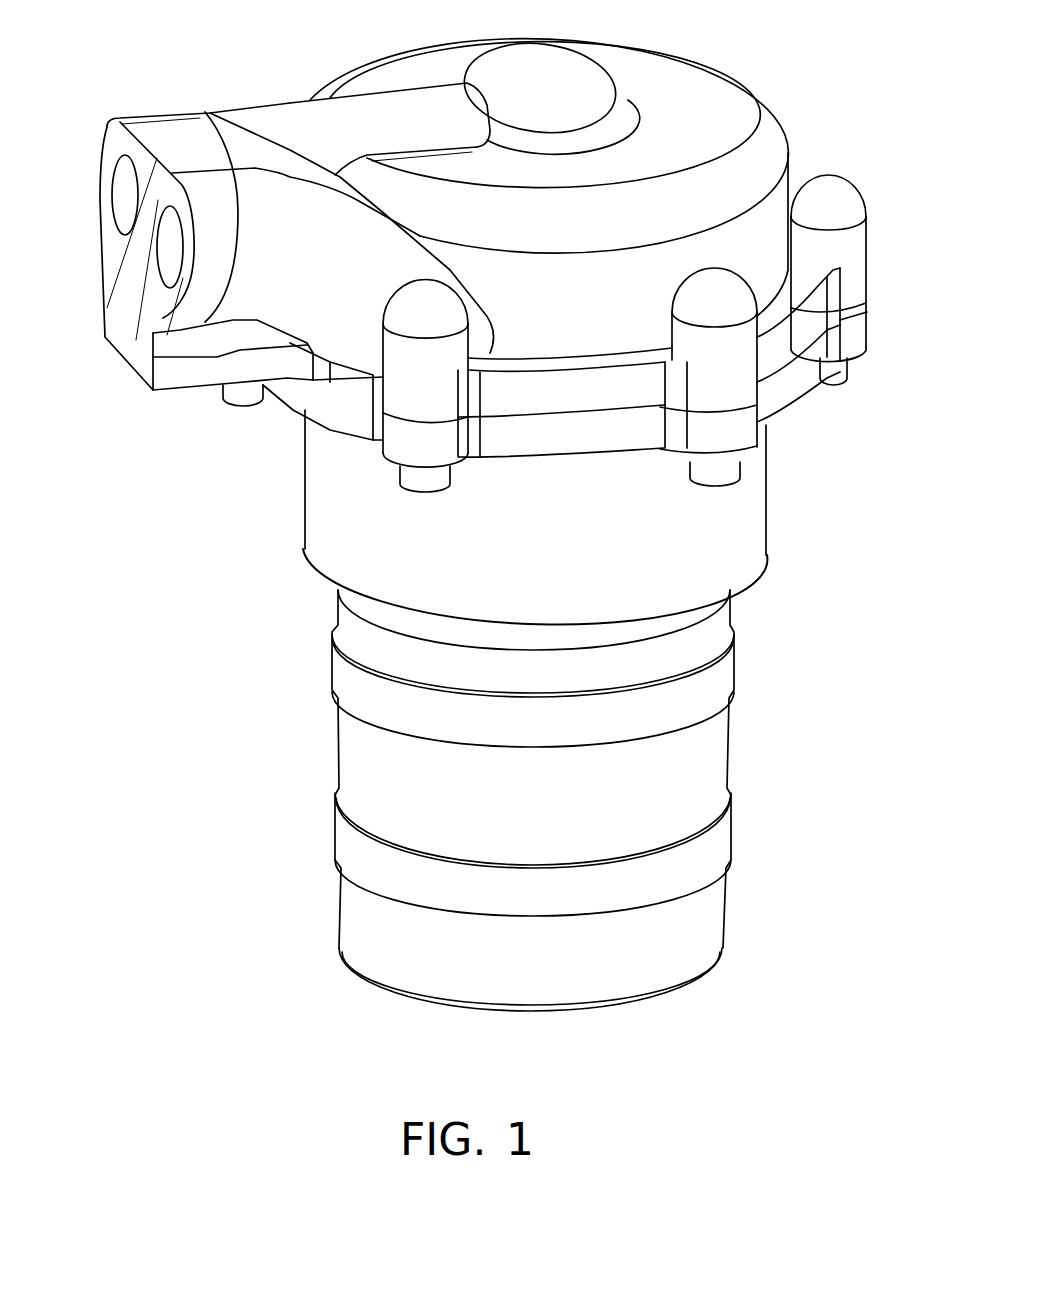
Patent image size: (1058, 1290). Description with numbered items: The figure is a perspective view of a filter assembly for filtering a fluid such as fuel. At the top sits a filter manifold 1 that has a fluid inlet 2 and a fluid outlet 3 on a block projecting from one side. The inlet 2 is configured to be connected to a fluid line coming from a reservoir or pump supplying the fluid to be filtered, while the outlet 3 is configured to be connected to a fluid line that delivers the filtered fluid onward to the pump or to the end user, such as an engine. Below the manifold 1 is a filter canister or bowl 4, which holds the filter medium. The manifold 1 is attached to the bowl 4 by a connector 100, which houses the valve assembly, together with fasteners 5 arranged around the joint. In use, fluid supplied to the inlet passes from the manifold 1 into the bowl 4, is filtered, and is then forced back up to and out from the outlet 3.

The filter manifold 1 is at (713, 67).
The fluid inlet 2 is at (122, 160).
The fluid outlet 3 is at (165, 240).
The filter bowl 4 is at (728, 730).
The fasteners 5 is at (857, 184).
The connector 100 is at (767, 497).